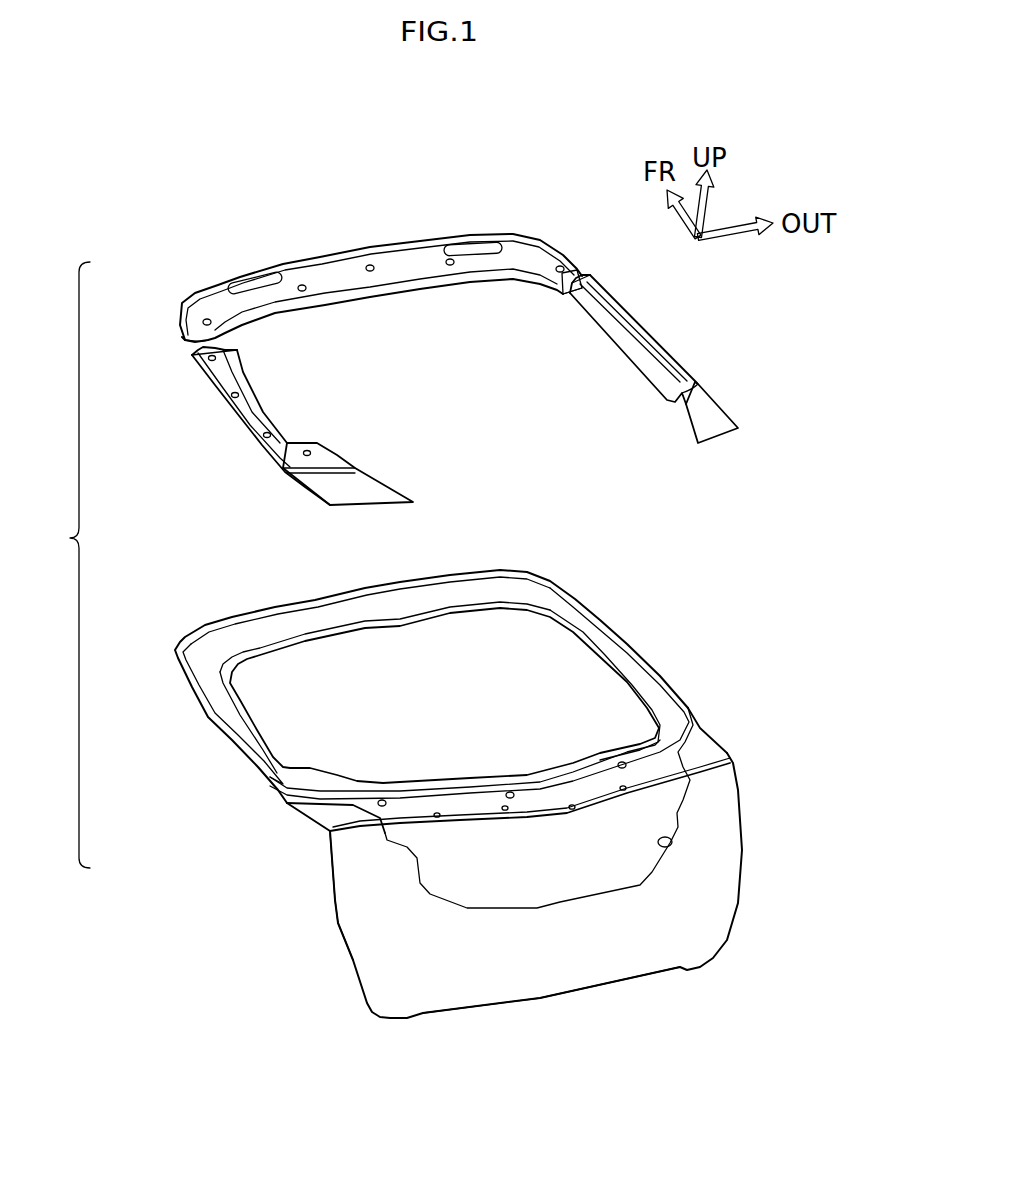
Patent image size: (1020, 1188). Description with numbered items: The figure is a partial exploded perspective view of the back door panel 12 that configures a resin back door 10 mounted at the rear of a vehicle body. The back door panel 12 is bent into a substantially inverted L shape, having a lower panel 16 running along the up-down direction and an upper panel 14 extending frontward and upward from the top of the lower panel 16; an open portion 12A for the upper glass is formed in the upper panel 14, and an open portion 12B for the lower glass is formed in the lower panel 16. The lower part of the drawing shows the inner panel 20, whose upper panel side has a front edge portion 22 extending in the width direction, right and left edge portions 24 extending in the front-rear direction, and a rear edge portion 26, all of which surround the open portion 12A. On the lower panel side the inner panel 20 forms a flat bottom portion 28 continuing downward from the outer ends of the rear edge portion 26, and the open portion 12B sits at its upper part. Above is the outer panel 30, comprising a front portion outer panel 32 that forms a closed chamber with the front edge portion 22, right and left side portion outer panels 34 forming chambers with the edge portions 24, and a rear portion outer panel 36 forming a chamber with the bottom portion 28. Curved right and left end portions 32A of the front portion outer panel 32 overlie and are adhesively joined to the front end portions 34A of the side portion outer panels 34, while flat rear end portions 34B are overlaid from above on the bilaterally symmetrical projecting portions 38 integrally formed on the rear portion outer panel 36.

The resin back door 10 is at (199, 571).
The back door panel 12 is at (731, 597).
The open portion 12A is at (402, 628).
The open portion 12B is at (673, 843).
The upper panel 14 is at (206, 718).
The lower panel 16 is at (347, 961).
The inner panel 20 is at (634, 616).
The front edge portion 22 is at (310, 622).
The right and left edge portions 24 is at (257, 755).
The rear edge portion 26 is at (577, 793).
The bottom portion 28 is at (337, 920).
The outer panel 30 is at (513, 222).
The front portion outer panel 32 is at (313, 256).
The right and left end portions 32A is at (213, 344).
The side portion outer panels 34 is at (250, 440).
The front end portions 34A is at (197, 346).
The rear end portions 34B is at (372, 493).
The rear portion outer panel 36 is at (600, 963).
The projecting portions 38 is at (323, 810).